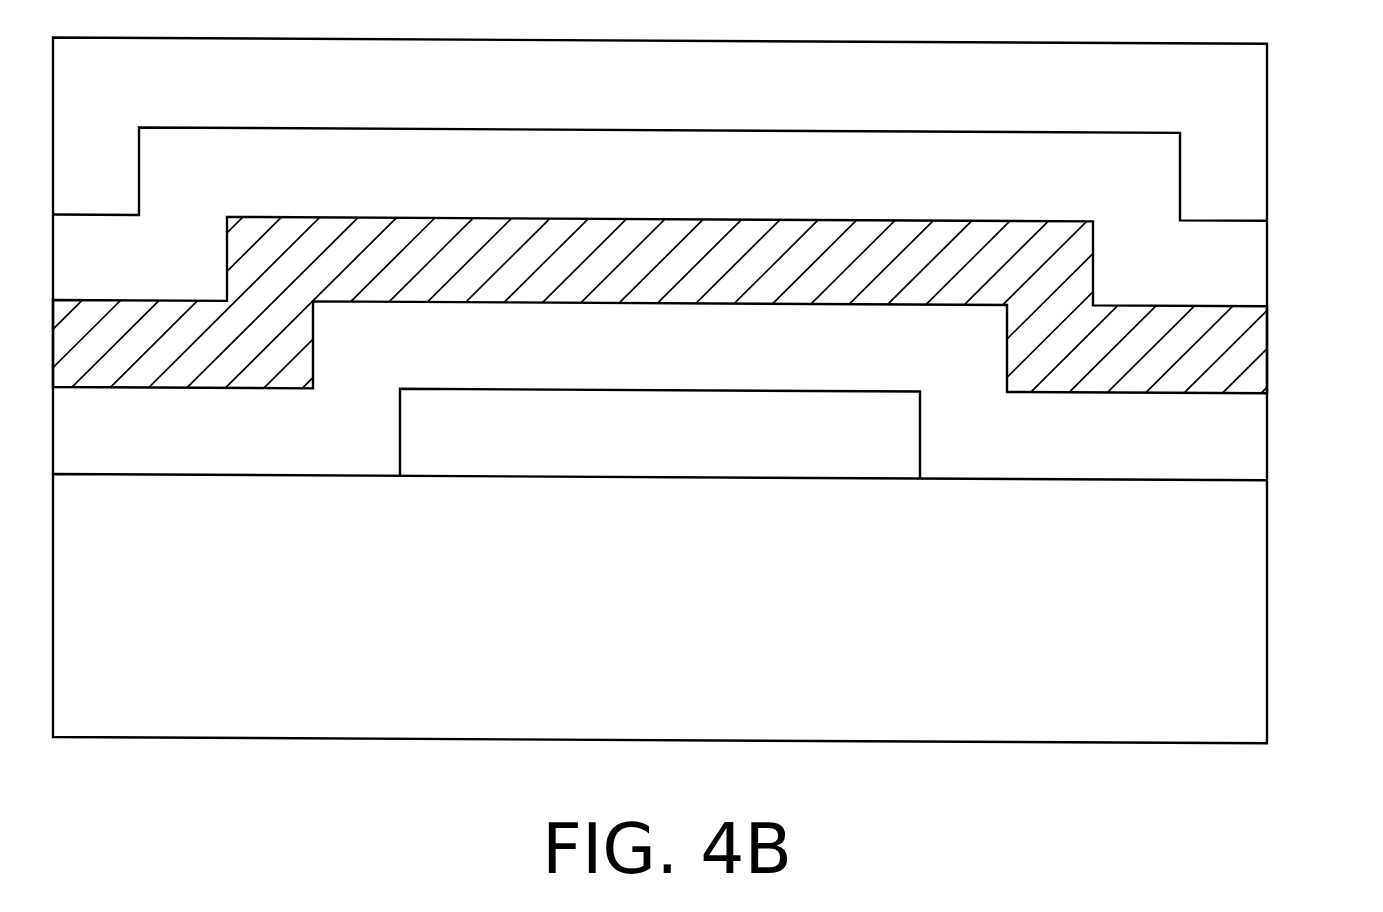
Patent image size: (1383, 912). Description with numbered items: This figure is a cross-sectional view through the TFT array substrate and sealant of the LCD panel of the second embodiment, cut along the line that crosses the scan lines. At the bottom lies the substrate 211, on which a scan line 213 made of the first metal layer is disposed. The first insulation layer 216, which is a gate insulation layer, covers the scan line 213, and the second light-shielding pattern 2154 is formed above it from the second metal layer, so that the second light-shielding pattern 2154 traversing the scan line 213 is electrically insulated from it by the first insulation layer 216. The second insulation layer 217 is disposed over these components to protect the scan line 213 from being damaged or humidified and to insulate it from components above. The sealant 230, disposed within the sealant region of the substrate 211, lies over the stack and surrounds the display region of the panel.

The sealant 230 is at (1243, 160).
The second insulation layer 217 is at (1245, 267).
The second light-shielding pattern 2154 is at (1245, 348).
The first insulation layer 216 is at (1245, 430).
The scan line 213 is at (907, 446).
The substrate 211 is at (1248, 589).